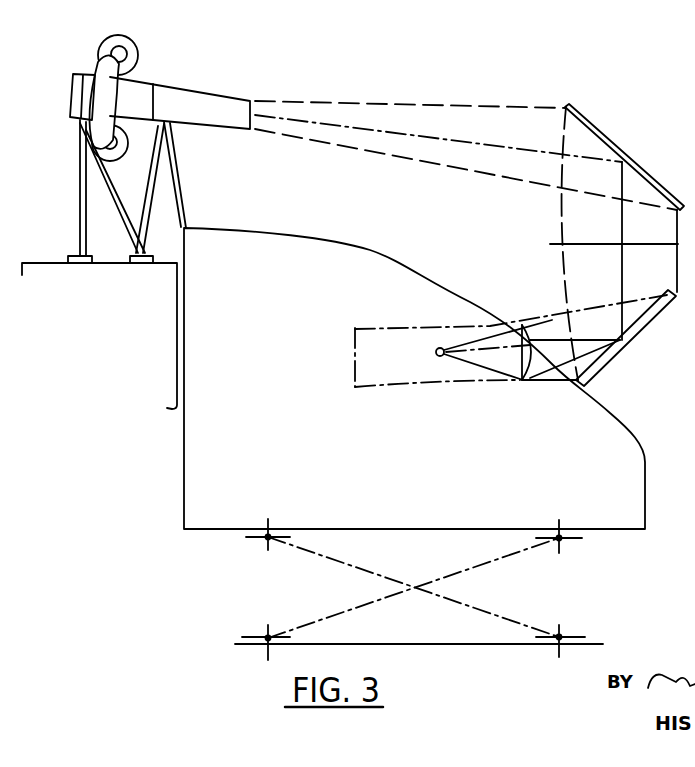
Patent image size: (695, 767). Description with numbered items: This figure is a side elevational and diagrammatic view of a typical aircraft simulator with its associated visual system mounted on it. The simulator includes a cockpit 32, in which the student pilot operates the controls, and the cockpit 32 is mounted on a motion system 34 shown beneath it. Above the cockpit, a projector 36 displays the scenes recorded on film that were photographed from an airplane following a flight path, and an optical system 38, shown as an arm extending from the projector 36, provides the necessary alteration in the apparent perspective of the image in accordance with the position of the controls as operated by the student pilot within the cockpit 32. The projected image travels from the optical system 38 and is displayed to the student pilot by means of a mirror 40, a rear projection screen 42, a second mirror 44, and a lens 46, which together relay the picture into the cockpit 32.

The cockpit 32 is at (342, 461).
The motion system 34 is at (334, 598).
The projector 36 is at (85, 63).
The optical system 38 is at (168, 85).
The mirror 40 is at (623, 153).
The rear projection screen 42 is at (548, 244).
The mirror 44 is at (625, 344).
The lens 46 is at (530, 345).